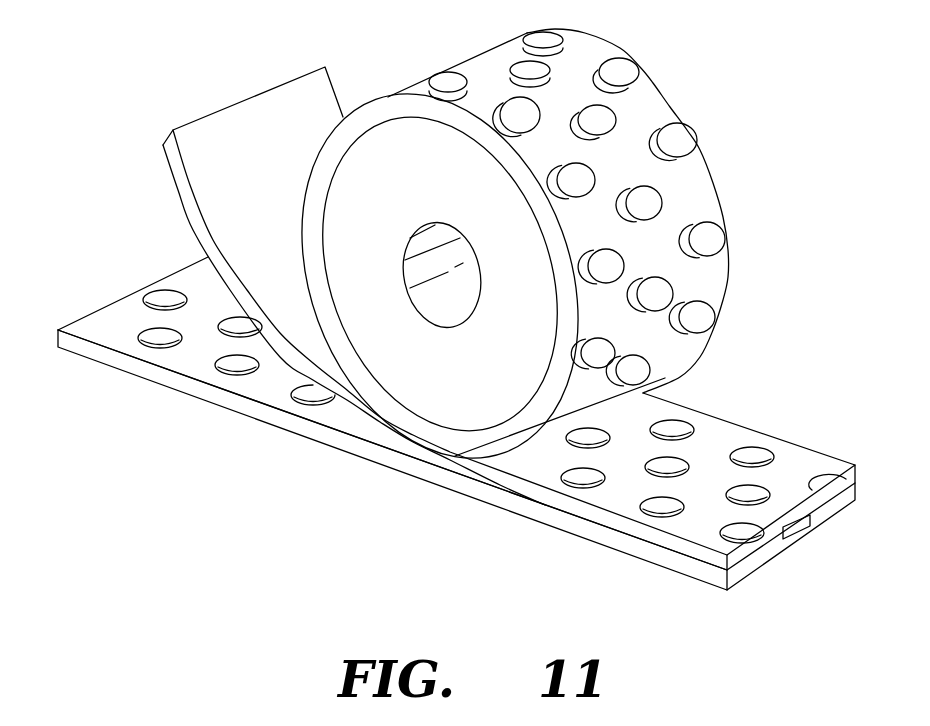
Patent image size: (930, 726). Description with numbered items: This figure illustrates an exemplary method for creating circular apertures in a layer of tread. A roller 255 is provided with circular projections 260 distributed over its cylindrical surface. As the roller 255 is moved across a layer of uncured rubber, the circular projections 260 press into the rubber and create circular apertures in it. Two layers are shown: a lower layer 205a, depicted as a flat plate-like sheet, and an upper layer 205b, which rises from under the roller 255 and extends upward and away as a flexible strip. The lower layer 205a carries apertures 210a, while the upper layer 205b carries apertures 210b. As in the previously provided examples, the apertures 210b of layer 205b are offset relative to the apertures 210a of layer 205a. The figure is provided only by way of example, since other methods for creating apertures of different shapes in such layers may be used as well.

The layer 205a is at (168, 376).
The layer 205b is at (252, 123).
The apertures 210a is at (167, 302).
The apertures 210b is at (750, 460).
The roller 255 is at (428, 383).
The circular projections 260 is at (718, 241).